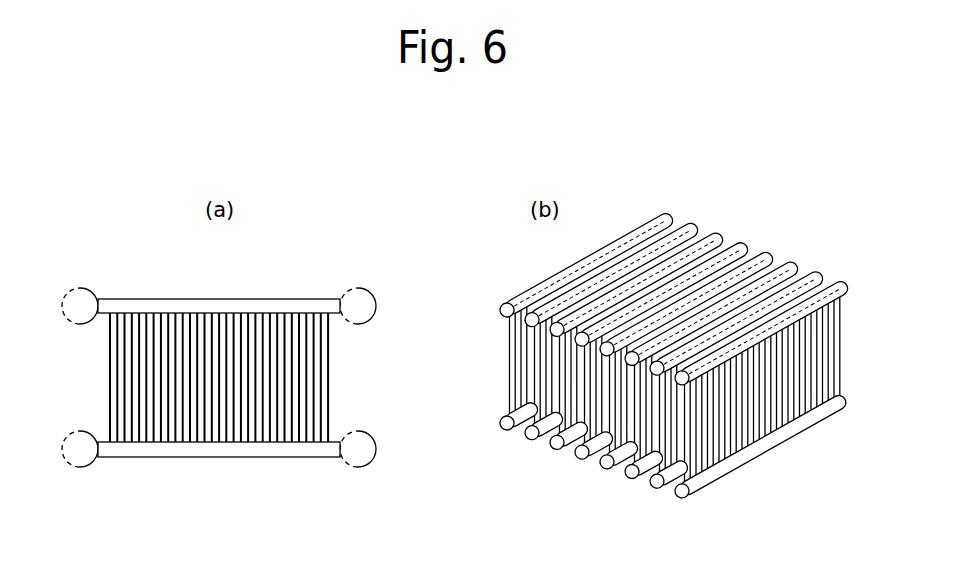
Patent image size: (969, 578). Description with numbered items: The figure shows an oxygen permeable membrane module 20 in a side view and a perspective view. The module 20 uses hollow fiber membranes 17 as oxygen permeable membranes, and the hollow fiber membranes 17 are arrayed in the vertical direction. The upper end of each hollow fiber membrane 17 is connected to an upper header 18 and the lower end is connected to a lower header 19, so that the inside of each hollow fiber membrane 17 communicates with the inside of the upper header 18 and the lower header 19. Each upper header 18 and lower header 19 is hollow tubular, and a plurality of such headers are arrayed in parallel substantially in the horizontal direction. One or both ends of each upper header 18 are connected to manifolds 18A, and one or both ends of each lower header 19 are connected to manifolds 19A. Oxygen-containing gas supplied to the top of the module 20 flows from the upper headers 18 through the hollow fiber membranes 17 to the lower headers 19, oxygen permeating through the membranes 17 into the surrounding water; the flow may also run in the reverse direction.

The hollow fiber membrane 17 is at (108, 377).
The upper header 18 is at (136, 298).
The manifold 18A is at (80, 289).
The lower header 19 is at (134, 458).
The manifold 19A is at (73, 467).
The oxygen permeable membrane module 20 is at (271, 261).